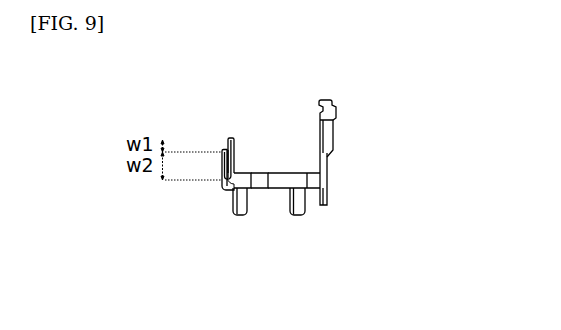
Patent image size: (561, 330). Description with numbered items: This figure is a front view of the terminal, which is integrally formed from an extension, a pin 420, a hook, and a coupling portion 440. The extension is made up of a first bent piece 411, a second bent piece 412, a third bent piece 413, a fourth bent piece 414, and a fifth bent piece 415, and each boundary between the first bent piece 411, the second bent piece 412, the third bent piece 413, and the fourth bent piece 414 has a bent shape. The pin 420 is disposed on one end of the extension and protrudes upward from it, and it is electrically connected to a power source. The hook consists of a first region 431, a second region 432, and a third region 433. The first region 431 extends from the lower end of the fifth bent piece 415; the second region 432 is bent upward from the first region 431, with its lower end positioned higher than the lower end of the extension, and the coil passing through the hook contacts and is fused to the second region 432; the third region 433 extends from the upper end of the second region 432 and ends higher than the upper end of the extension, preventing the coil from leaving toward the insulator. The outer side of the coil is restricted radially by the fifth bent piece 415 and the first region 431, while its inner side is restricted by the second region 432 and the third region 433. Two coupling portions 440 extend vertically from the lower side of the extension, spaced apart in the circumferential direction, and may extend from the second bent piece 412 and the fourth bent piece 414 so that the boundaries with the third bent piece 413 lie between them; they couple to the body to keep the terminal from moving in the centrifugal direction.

The first bent piece 411 is at (315, 212).
The second bent piece 412 is at (297, 172).
The third bent piece 413 is at (262, 172).
The fourth bent piece 414 is at (248, 172).
The fifth bent piece 415 is at (223, 185).
The pin 420 is at (337, 114).
The first region 431 is at (223, 172).
The second region 432 is at (221, 152).
The third region 433 is at (228, 140).
The coupling portion 440 is at (289, 220).